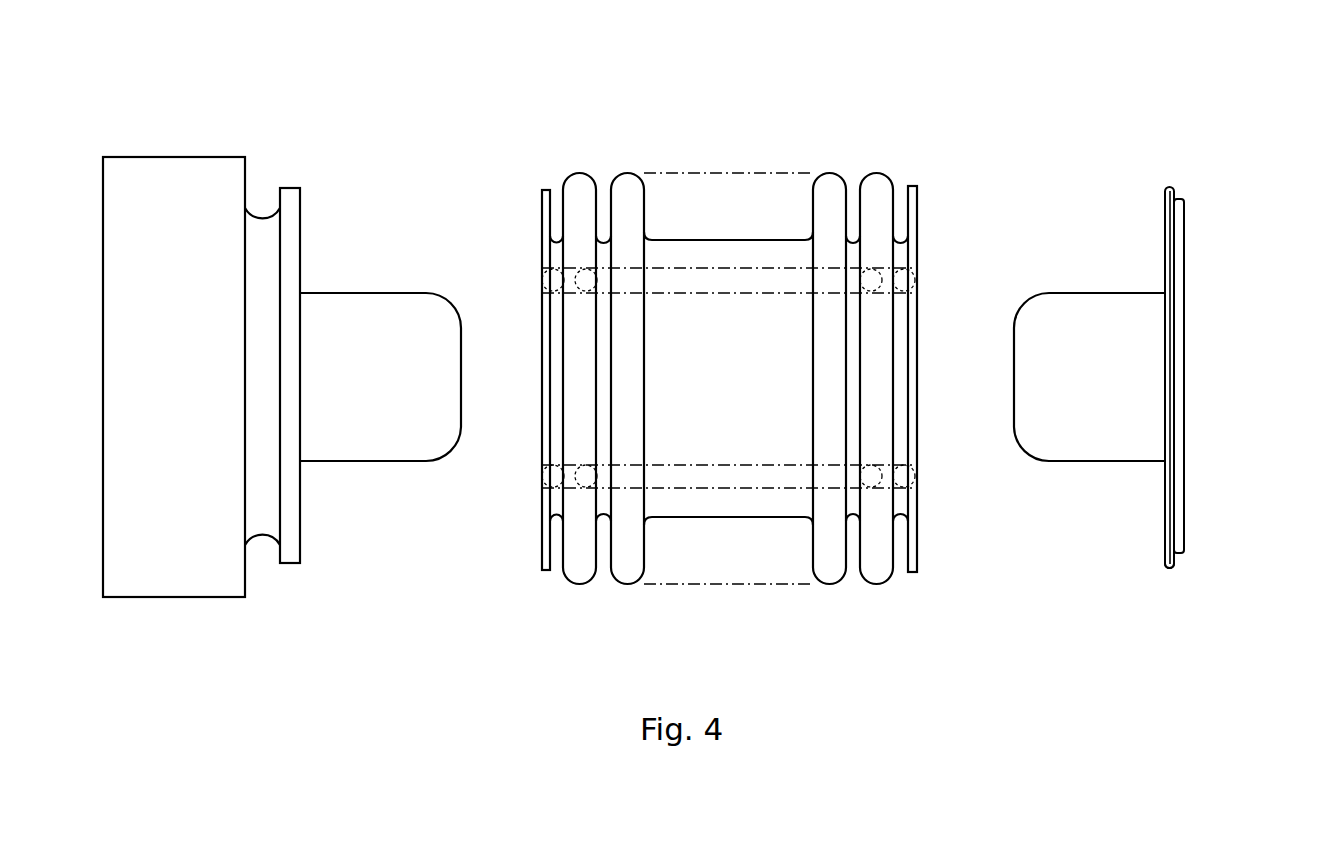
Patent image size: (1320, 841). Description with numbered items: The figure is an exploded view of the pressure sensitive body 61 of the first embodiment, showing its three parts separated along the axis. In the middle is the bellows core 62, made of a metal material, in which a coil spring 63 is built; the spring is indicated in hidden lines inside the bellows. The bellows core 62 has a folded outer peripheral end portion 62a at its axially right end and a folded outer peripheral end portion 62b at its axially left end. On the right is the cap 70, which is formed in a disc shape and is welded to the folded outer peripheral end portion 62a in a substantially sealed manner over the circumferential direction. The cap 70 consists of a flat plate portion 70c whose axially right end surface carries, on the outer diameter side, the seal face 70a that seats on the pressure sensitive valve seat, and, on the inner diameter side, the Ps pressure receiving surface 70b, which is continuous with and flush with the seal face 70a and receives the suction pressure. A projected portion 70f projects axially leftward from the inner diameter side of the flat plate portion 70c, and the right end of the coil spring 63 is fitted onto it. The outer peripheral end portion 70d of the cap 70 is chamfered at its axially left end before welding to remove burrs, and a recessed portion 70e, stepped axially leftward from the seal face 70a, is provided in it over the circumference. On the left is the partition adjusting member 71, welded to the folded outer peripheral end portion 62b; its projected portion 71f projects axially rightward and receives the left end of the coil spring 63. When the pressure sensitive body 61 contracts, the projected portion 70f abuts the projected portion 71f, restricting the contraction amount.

The pressure sensitive body 61 is at (738, 123).
The bellows core 62 is at (628, 167).
The folded outer peripheral end portion 62a is at (913, 218).
The folded outer peripheral end portion 62b is at (542, 218).
The coil spring 63 is at (878, 272).
The cap 70 is at (1160, 158).
The seal face 70a is at (1186, 218).
The Ps pressure receiving surface 70b is at (1186, 386).
The flat plate portion 70c is at (1178, 428).
The outer peripheral end portion 70d is at (1166, 189).
The recessed portion 70e is at (1178, 567).
The projected portion 70f is at (1072, 444).
The partition adjusting member 71 is at (208, 138).
The projected portion 71f is at (372, 444).